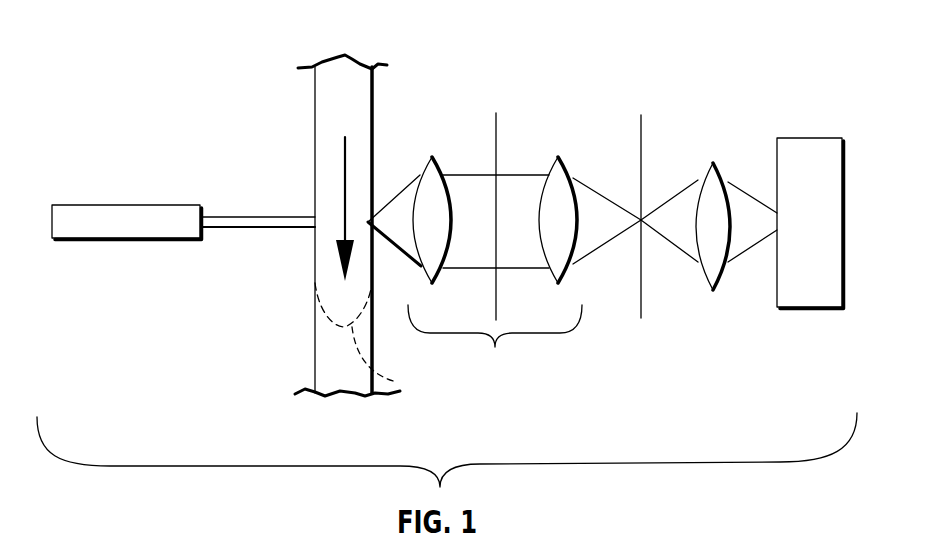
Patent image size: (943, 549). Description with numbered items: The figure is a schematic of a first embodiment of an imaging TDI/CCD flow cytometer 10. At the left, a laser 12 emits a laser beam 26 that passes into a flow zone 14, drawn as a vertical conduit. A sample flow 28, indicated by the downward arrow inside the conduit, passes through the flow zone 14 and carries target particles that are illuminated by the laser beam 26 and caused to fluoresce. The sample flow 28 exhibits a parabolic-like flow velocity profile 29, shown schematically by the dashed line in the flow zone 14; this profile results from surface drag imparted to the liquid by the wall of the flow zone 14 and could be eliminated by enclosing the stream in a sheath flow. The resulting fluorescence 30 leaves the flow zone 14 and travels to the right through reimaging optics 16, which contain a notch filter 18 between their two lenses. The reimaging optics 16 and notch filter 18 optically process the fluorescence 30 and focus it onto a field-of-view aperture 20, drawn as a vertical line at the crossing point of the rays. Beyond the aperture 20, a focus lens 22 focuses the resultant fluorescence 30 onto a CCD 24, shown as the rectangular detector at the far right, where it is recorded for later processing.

The TDI/CCD flow cytometer 10 is at (552, 78).
The laser 12 is at (131, 205).
The flow zone 14 is at (315, 325).
The reimaging optics 16 is at (495, 268).
The notch filter 18 is at (497, 143).
The aperture 20 is at (641, 293).
The focus lens 22 is at (718, 168).
The CCD 24 is at (808, 290).
The laser beam 26 is at (258, 218).
The sample flow 28 is at (344, 207).
The flow velocity profile 29 is at (368, 338).
The fluorescence 30 is at (397, 200).